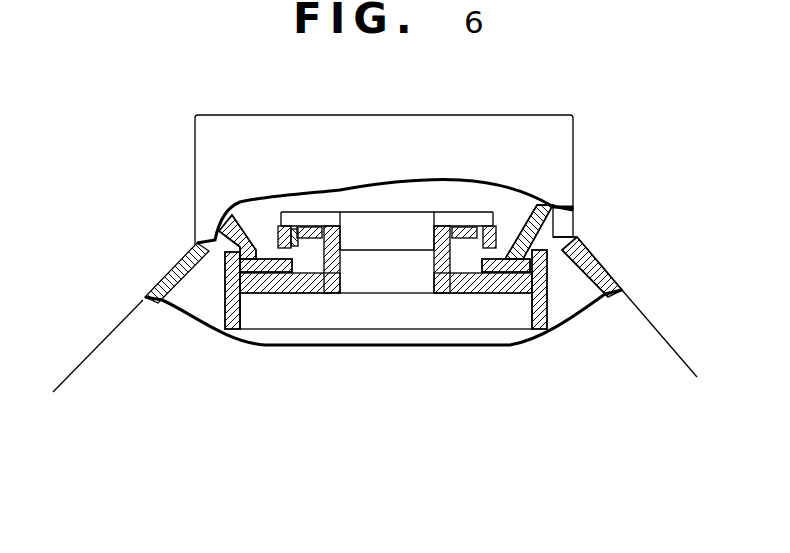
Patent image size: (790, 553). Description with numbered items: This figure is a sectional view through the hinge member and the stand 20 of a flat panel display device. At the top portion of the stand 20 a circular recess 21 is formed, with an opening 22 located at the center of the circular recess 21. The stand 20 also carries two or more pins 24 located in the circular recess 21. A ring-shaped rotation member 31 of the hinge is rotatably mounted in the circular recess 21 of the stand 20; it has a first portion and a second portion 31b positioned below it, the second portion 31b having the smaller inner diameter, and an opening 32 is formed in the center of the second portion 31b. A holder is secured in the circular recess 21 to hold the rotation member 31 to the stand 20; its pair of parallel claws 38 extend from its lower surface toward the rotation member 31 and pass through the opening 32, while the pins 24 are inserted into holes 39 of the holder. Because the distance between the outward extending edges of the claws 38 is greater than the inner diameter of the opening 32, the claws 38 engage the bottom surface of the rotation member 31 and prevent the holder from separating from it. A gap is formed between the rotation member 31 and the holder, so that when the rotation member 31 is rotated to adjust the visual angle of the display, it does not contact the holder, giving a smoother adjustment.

The stand 20 is at (157, 285).
The circular recess 21 is at (222, 303).
The opening 22 is at (353, 282).
The pins 24 is at (325, 228).
The rotation member 31 is at (196, 243).
The second portion 31b is at (543, 228).
The opening 32 is at (285, 243).
The claws 38 is at (264, 280).
The holes 39 is at (327, 232).